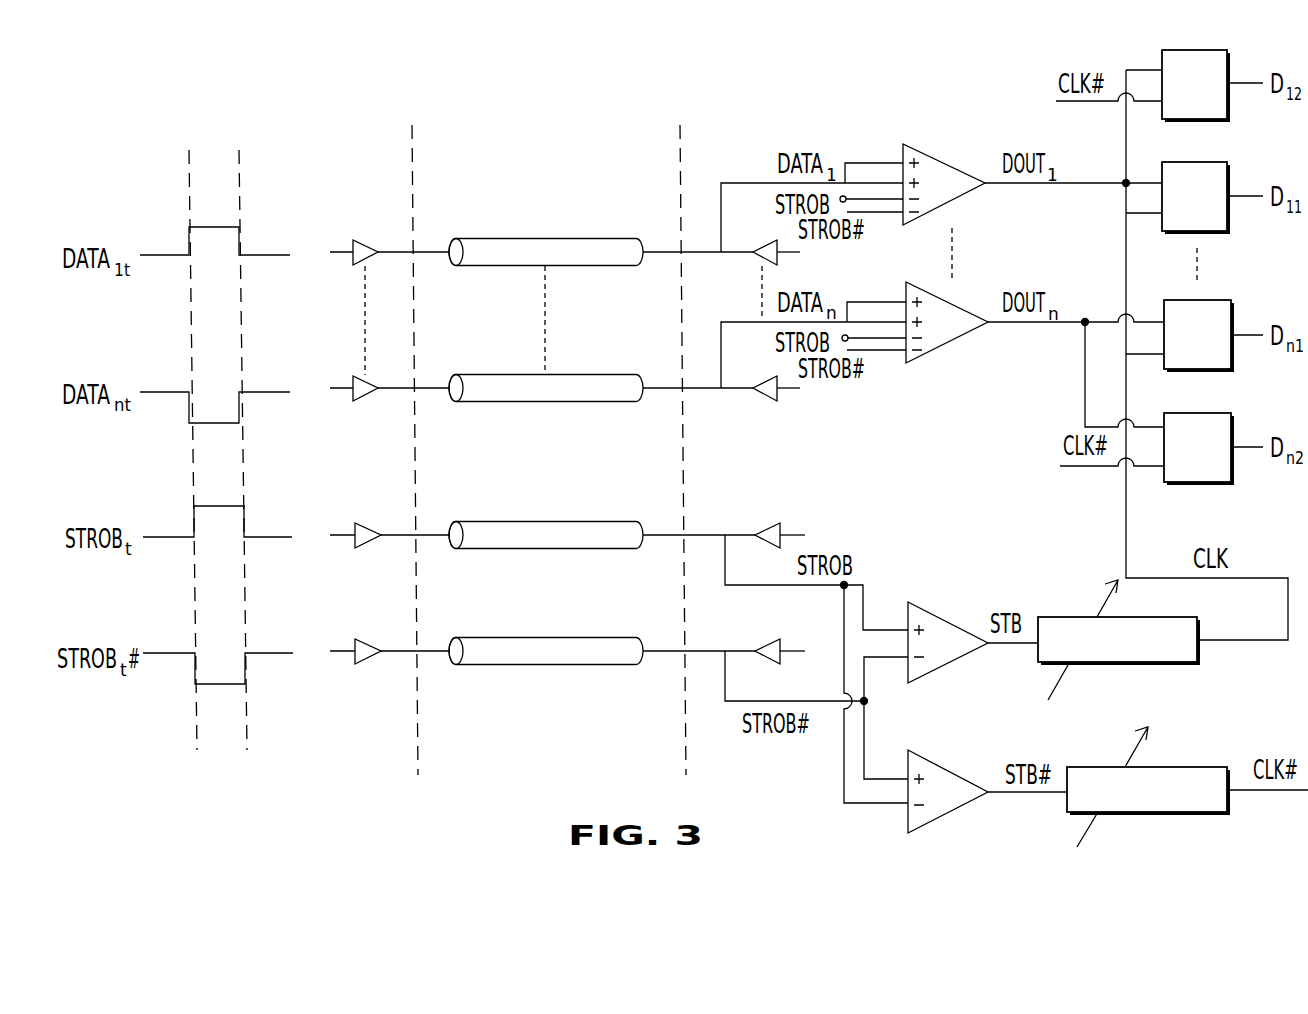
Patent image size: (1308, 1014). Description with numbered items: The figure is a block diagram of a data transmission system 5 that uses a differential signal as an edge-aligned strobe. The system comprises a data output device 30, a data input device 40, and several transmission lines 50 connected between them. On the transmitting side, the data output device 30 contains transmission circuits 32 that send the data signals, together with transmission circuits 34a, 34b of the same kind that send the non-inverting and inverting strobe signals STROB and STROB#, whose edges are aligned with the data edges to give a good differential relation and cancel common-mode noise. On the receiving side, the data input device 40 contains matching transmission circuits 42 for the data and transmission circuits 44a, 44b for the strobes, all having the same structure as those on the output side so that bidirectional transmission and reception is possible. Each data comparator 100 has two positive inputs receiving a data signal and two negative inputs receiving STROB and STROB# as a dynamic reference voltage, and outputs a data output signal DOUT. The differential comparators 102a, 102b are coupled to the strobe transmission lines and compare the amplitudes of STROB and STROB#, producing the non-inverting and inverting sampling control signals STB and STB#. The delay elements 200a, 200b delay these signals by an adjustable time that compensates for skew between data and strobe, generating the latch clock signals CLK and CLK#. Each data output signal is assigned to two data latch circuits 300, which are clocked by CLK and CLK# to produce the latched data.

The data transmission system 5 is at (541, 145).
The data output device 30 is at (412, 153).
The data input device 40 is at (680, 150).
The transmission circuits 32 is at (362, 376).
The transmission circuit 34a is at (363, 523).
The transmission circuit 34b is at (363, 639).
The transmission lines 50 is at (586, 238).
The transmission circuits 42 is at (768, 265).
The transmission circuit 44a is at (779, 523).
The transmission circuit 44b is at (779, 664).
The data comparators 100 is at (917, 150).
The differential comparator 102a is at (920, 608).
The differential comparator 102b is at (920, 756).
The delay element 200a is at (1125, 662).
The delay element 200b is at (1153, 812).
The data latch circuits 300 is at (1213, 50).